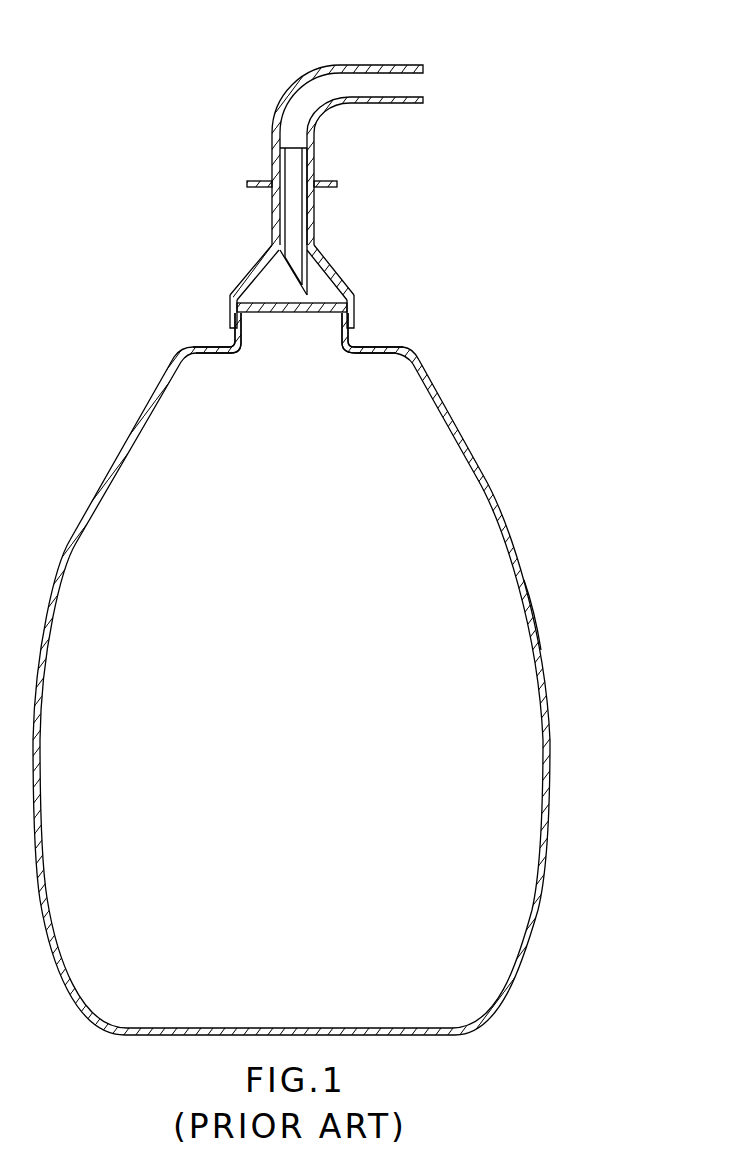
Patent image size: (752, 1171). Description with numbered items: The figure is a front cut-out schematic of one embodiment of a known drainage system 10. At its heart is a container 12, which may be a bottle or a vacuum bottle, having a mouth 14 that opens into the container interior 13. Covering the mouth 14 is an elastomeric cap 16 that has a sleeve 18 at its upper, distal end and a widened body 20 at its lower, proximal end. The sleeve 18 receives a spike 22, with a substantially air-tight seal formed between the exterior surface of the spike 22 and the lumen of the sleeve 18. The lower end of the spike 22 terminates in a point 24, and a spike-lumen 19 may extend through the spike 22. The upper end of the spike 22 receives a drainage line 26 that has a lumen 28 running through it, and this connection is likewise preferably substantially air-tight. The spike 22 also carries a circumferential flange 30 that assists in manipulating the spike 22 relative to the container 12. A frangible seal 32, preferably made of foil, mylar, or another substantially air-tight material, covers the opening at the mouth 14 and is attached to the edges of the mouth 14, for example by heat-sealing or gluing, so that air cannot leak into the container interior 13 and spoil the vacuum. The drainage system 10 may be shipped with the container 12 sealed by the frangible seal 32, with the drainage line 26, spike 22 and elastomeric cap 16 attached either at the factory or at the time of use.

The drainage system 10 is at (335, 674).
The container 12 is at (548, 698).
The container interior 13 is at (523, 608).
The mouth 14 is at (324, 343).
The elastomeric cap 16 is at (250, 269).
The sleeve 18 is at (306, 206).
The spike-lumen 19 is at (292, 196).
The widened body 20 is at (348, 289).
The spike 22 is at (256, 183).
The point 24 is at (293, 296).
The drainage line 26 is at (343, 66).
The lumen 28 is at (367, 62).
The circumferential flange 30 is at (338, 184).
The frangible seal 32 is at (270, 314).